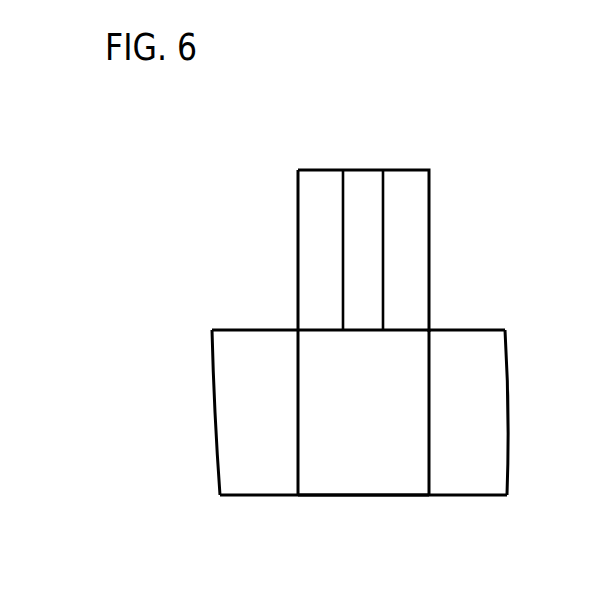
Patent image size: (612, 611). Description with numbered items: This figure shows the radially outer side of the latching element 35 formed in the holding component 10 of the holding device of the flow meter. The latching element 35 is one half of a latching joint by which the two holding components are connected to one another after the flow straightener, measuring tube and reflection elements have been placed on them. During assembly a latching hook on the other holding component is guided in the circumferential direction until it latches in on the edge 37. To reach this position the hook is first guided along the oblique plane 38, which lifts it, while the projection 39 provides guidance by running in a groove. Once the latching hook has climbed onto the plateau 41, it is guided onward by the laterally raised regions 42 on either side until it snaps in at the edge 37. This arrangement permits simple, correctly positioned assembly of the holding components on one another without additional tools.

The holding component 10 is at (498, 435).
The latching element 35 is at (448, 310).
The edge 37 is at (350, 498).
The oblique plane 38 is at (415, 202).
The projection 39 is at (363, 185).
The plateau 41 is at (395, 473).
The laterally raised regions 42 is at (437, 455).